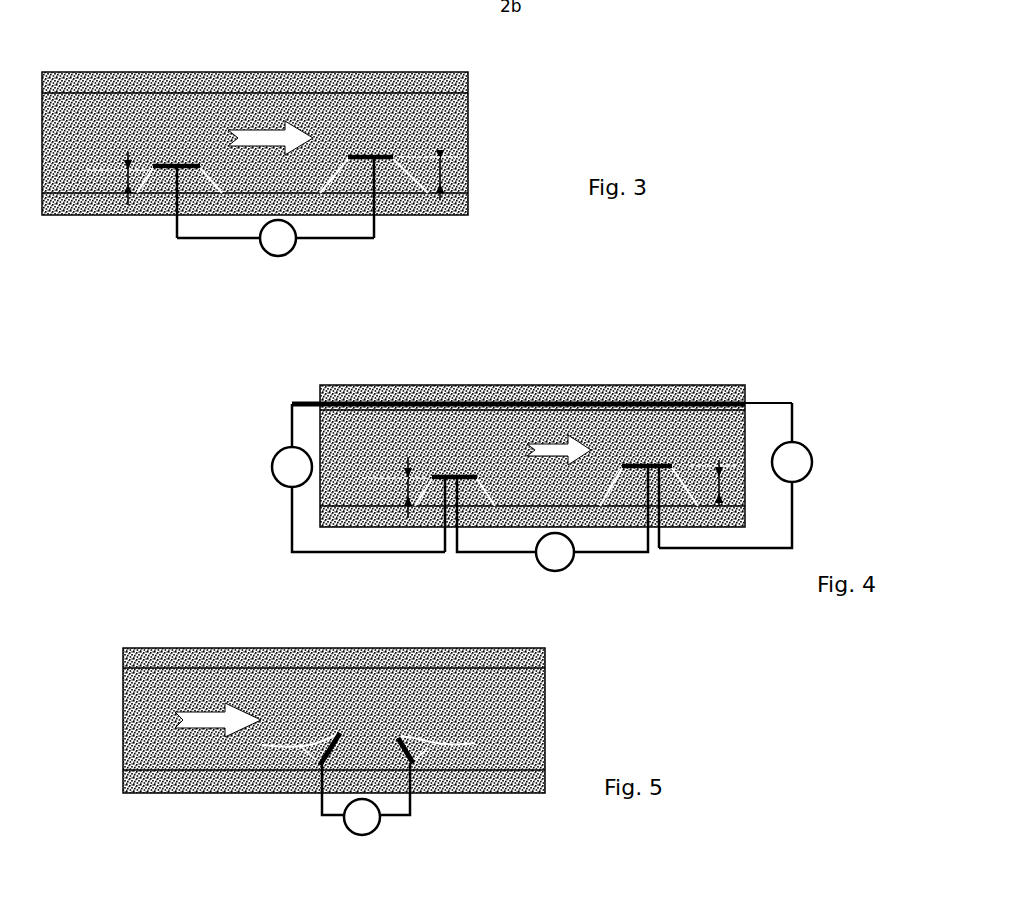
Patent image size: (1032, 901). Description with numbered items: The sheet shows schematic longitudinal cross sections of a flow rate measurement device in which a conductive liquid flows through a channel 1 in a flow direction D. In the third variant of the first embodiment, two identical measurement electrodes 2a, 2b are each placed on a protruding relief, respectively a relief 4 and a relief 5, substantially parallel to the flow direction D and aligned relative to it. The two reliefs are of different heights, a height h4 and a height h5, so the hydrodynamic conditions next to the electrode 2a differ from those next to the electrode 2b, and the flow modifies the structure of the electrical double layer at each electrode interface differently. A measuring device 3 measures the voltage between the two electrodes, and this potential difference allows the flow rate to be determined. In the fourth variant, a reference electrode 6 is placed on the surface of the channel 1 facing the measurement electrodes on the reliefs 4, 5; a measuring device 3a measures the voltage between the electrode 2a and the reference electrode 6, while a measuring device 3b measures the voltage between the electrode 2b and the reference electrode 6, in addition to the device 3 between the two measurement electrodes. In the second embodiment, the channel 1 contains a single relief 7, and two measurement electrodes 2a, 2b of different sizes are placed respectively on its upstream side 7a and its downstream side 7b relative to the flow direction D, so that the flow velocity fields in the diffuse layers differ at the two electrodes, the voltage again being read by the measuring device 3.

In FIG. 3, the channel 1 is at (42, 132).
In FIG. 4, the channel 1 is at (396, 455).
In FIG. 5, the channel 1 is at (143, 751).
In FIG. 3, the measurement electrode 2a is at (197, 163).
In FIG. 4, the measurement electrode 2a is at (477, 476).
In FIG. 5, the measurement electrode 2a is at (340, 733).
In FIG. 3, the measurement electrode 2b is at (375, 155).
In FIG. 4, the measurement electrode 2b is at (647, 464).
In FIG. 5, the measurement electrode 2b is at (402, 736).
In FIG. 3, the voltage measuring device 3 is at (280, 256).
In FIG. 4, the voltage measuring device 3 is at (560, 571).
In FIG. 5, the voltage measuring device 3 is at (372, 832).
In FIG. 4, the voltage measuring device V1 3a is at (272, 467).
In FIG. 4, the voltage measuring device V2 3b is at (812, 464).
In FIG. 3, the relief 4 is at (158, 215).
In FIG. 4, the relief 4 is at (437, 497).
In FIG. 3, the relief 5 is at (400, 215).
In FIG. 4, the relief 5 is at (675, 490).
In FIG. 4, the reference electrode 6 is at (653, 385).
In FIG. 5, the relief 7 is at (352, 740).
In FIG. 5, the upstream side of relief 7a is at (305, 764).
In FIG. 5, the downstream side of relief 7b is at (432, 757).
In FIG. 3, the flow direction D is at (295, 128).
In FIG. 4, the flow direction D is at (542, 440).
In FIG. 5, the flow direction D is at (222, 718).
In FIG. 3, the height of relief 4 h4 is at (100, 185).
In FIG. 4, the height of relief 4 h4 is at (395, 498).
In FIG. 3, the height of relief 5 h5 is at (446, 172).
In FIG. 4, the height of relief 5 h5 is at (726, 488).